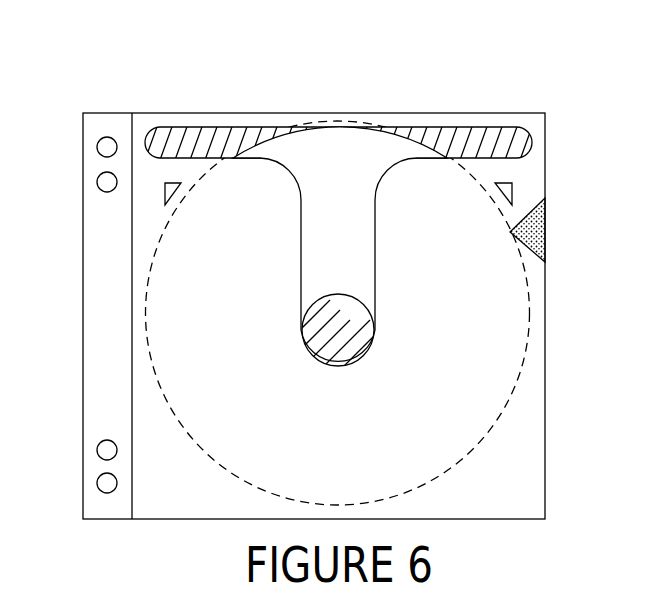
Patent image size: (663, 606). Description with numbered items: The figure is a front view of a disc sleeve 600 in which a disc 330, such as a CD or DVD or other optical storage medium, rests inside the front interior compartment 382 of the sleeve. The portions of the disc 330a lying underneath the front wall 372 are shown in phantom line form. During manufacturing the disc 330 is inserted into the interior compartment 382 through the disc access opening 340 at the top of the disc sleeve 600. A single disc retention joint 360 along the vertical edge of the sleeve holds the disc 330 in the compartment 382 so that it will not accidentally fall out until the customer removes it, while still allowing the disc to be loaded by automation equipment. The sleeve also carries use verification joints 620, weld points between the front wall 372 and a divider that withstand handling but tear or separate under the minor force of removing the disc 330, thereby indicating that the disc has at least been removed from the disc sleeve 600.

The disc sleeve 600 is at (195, 86).
The use verification joints 620 is at (165, 190).
The disc access opening 340 is at (533, 144).
The disc 330 is at (358, 221).
The interior compartment 382 is at (373, 250).
The disc retention joint 360 is at (543, 233).
The portions of the disc 330a is at (508, 334).
The front wall 372 is at (527, 442).